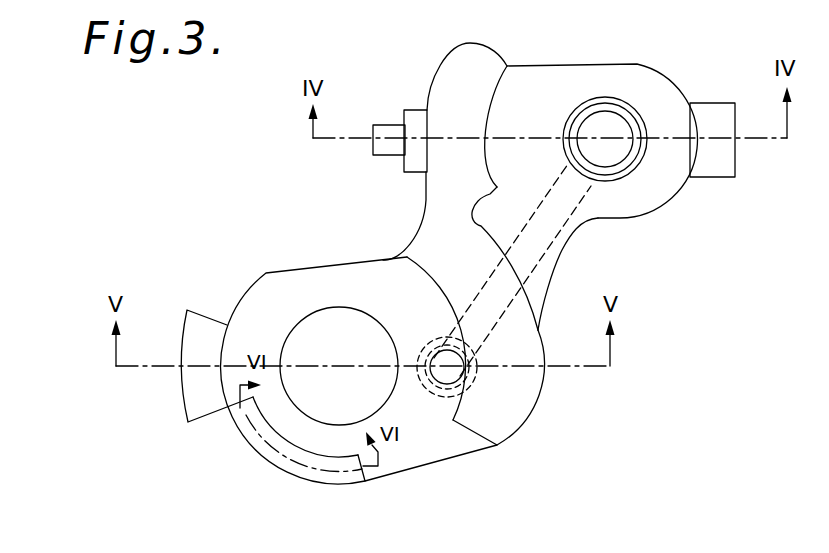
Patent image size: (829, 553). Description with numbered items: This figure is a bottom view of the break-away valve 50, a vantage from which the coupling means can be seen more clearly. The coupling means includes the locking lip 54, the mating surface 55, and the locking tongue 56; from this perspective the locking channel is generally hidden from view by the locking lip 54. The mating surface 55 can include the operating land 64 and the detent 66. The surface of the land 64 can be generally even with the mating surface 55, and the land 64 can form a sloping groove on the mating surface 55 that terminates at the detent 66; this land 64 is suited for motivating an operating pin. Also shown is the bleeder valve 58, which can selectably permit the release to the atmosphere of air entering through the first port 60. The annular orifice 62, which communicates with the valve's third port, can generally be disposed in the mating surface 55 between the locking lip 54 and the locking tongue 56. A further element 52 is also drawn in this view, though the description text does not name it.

The break-away valve 50 is at (316, 200).
The upper arm 52 is at (588, 62).
The locking lip 54 is at (497, 408).
The mating surface 55 is at (250, 307).
The locking tongue 56 is at (190, 408).
The bleeder valve 58 is at (417, 117).
The first port 60 is at (608, 127).
The annular orifice 62 is at (320, 337).
The operating land 64 is at (275, 460).
The detent 66 is at (362, 477).